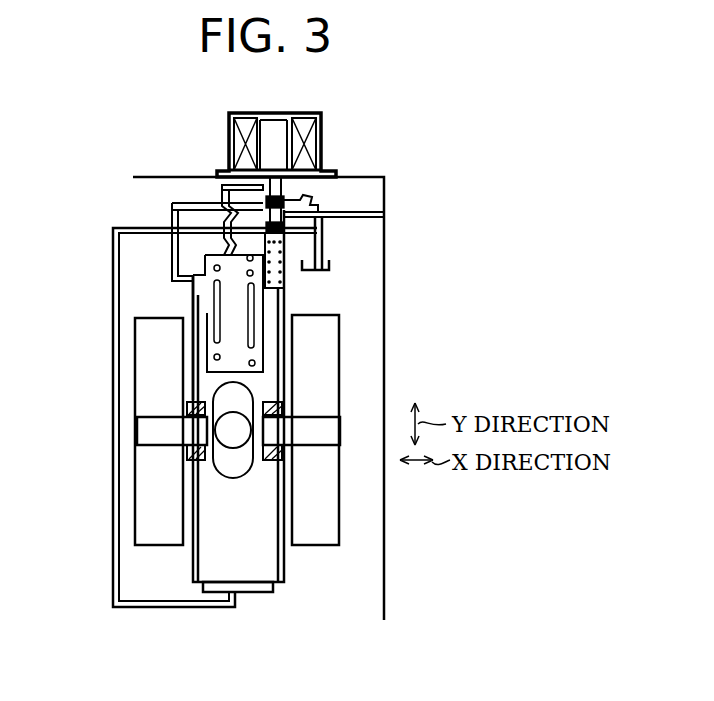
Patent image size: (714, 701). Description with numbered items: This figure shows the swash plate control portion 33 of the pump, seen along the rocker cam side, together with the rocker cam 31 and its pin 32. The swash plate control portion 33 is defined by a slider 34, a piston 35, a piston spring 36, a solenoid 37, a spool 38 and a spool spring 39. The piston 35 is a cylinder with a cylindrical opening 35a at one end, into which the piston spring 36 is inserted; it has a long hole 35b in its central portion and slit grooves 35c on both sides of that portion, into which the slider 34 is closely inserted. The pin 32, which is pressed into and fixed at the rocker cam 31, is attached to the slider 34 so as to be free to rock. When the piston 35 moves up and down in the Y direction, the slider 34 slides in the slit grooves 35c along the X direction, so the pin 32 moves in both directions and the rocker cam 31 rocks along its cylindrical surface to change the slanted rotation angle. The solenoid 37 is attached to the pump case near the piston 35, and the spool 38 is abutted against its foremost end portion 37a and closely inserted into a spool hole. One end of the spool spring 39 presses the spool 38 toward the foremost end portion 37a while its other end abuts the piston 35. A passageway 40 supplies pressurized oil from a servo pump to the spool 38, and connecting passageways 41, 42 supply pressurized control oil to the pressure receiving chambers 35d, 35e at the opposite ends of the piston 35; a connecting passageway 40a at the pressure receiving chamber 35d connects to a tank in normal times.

The rocker cam 31 is at (150, 515).
The pin 32 is at (150, 432).
The swash plate control portion 33 is at (350, 130).
The slider 34 is at (286, 398).
The piston 35 is at (258, 533).
The cylindrical opening 35a is at (195, 308).
The long hole 35b is at (226, 398).
The slit grooves 35c is at (185, 461).
The pressure receiving chamber 35d is at (210, 266).
The pressure receiving chamber 35e is at (248, 597).
The piston spring 36 is at (260, 333).
The solenoid 37 is at (272, 112).
The foremost end portion 37a is at (318, 168).
The spool 38 is at (308, 200).
The spool spring 39 is at (270, 265).
The passageway 40 is at (384, 214).
The connecting passageway 40a is at (222, 192).
The connecting passageway 41 is at (185, 203).
The connecting passageway 42 is at (113, 228).